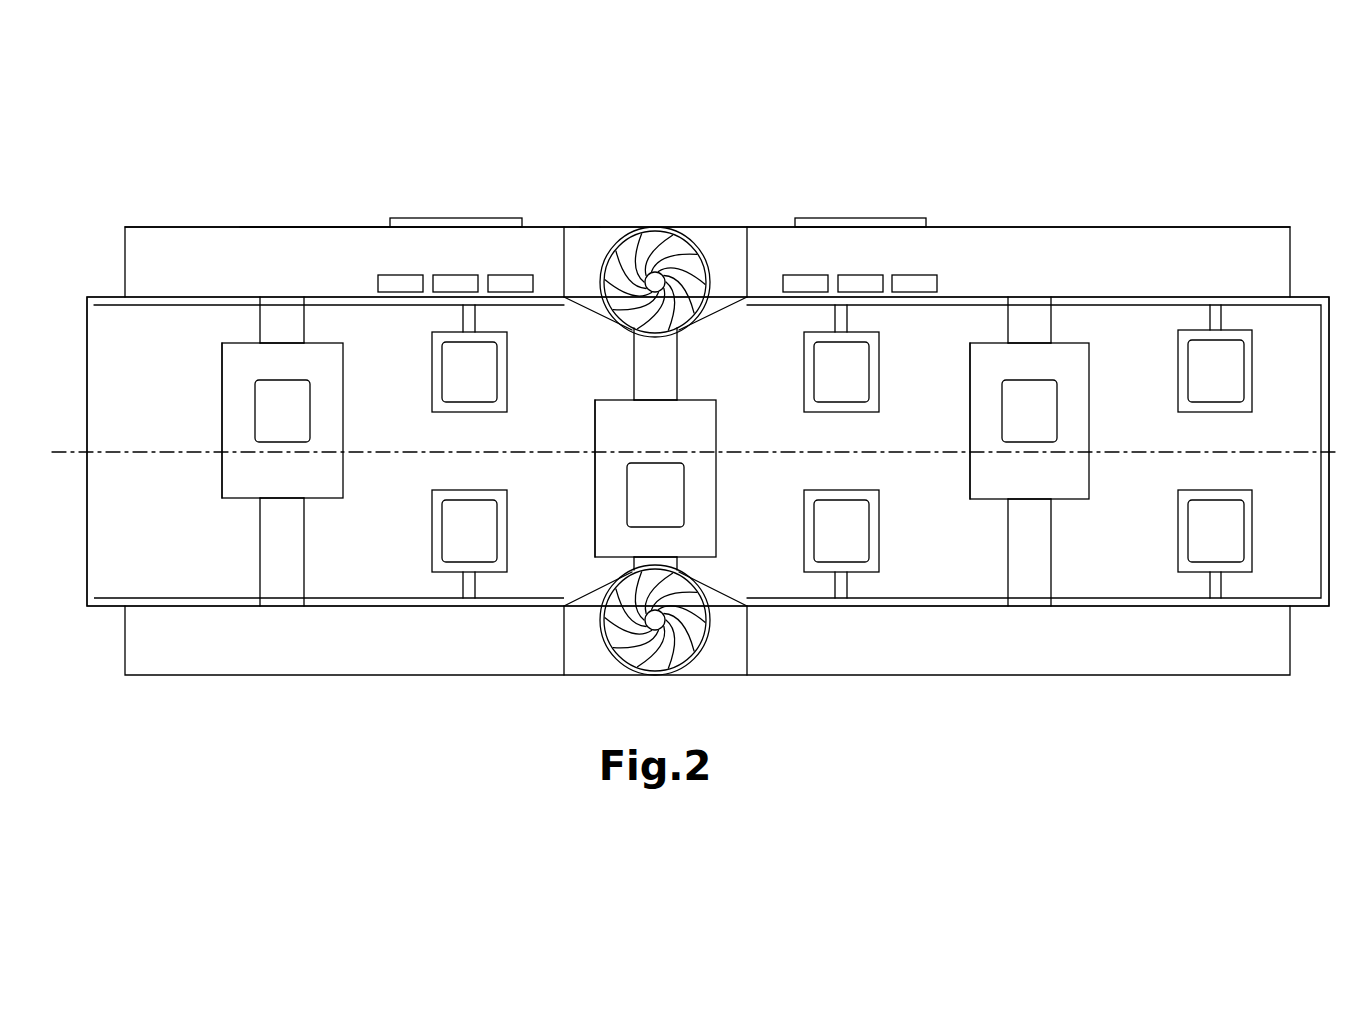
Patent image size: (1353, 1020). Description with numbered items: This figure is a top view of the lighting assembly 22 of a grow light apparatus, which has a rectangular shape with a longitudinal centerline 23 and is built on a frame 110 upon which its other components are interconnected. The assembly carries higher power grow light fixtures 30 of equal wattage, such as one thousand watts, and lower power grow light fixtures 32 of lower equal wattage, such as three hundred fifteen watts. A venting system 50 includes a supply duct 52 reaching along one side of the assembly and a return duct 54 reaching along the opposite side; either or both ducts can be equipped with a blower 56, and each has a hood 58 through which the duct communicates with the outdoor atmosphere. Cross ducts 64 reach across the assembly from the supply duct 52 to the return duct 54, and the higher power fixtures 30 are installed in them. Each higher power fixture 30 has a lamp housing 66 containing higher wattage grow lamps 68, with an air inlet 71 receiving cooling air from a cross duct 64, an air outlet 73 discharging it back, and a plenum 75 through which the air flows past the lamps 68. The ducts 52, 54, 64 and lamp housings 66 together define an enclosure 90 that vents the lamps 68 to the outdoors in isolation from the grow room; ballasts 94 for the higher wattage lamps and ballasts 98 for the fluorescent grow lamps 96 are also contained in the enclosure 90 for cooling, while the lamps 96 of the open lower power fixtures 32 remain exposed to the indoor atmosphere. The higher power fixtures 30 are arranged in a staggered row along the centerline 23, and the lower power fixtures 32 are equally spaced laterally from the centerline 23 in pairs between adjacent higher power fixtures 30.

The lighting assembly 22 is at (358, 130).
The longitudinal centerline 23 is at (180, 452).
The higher power grow light fixture 30 is at (228, 508).
The lower power grow light fixture 32 is at (432, 362).
The venting system 50 is at (124, 222).
The supply duct 52 is at (185, 227).
The return duct 54 is at (430, 680).
The blower 56 is at (690, 248).
The hood 58 is at (747, 247).
The cross duct 64 is at (260, 325).
The lamp housing 66 is at (222, 397).
The higher wattage grow lamp 68 is at (310, 415).
The air inlet 71 is at (285, 343).
The air outlet 73 is at (283, 498).
The plenum 75 is at (268, 370).
The enclosure 90 is at (262, 215).
The ballast 94 is at (500, 218).
The fluorescent grow lamp 96 is at (470, 402).
The ballast 98 is at (378, 278).
The frame 110 is at (88, 330).